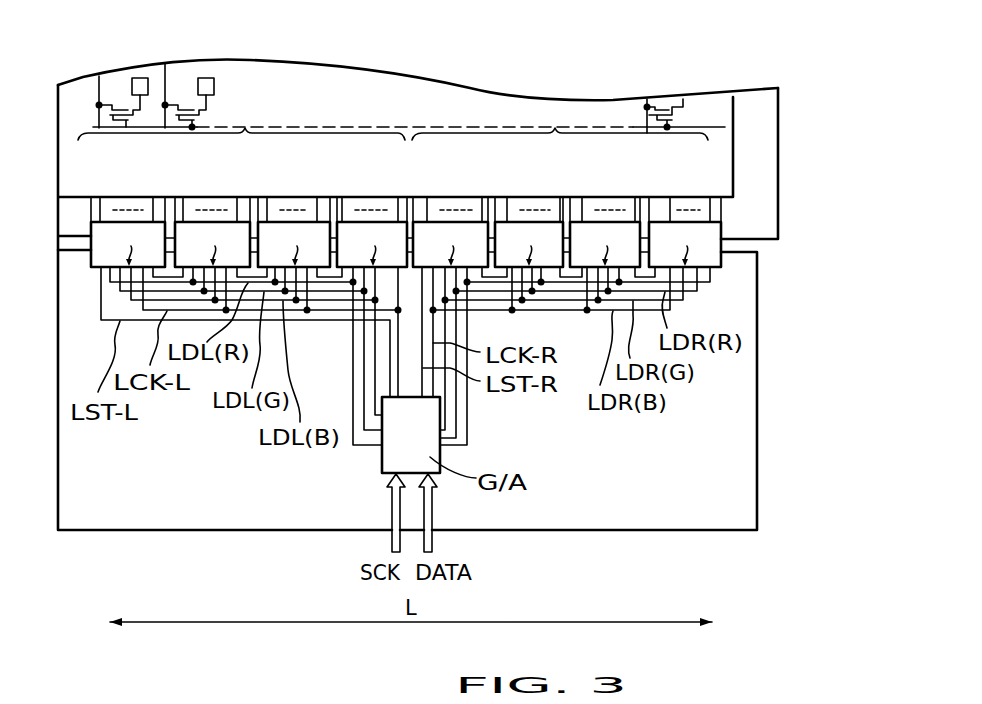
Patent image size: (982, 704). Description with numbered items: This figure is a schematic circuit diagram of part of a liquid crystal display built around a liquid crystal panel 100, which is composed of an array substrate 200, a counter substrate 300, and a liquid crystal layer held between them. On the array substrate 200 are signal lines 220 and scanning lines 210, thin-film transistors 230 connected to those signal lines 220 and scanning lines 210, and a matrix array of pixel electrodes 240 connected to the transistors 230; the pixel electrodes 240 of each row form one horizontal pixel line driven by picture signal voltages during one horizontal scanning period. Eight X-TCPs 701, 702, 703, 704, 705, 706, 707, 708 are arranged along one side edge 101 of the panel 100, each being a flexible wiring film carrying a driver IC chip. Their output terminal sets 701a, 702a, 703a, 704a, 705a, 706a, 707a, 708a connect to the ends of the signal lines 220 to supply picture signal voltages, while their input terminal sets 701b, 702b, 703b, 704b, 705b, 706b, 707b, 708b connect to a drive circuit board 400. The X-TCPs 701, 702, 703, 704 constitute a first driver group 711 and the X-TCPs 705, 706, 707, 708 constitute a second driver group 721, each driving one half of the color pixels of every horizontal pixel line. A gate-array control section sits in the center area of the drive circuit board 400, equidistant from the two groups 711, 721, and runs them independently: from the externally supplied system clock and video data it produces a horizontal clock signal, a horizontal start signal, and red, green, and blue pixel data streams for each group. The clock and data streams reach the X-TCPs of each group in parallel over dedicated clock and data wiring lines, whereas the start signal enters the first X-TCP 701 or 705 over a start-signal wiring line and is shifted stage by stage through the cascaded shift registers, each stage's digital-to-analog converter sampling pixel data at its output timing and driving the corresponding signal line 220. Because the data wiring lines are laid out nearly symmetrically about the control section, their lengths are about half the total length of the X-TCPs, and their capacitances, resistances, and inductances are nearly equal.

The liquid crystal panel 100 is at (472, 126).
The side edge 101 is at (757, 238).
The array substrate 200 is at (755, 108).
The counter substrate 300 is at (707, 118).
The scanning line 210 is at (148, 126).
The signal line 220 is at (97, 127).
The thin-film transistor 230 is at (112, 86).
The pixel electrode 240 is at (138, 78).
The drive circuit board 400 is at (742, 415).
The first driver group 711 is at (241, 123).
The second driver group 721 is at (560, 123).
The X-TCP 701 is at (108, 228).
The X-TCP 702 is at (192, 228).
The X-TCP 703 is at (275, 228).
The X-TCP 704 is at (354, 228).
The X-TCP 705 is at (430, 228).
The X-TCP 706 is at (512, 228).
The X-TCP 707 is at (587, 228).
The X-TCP 708 is at (667, 228).
The output terminal set 701a is at (142, 214).
The output terminal set 702a is at (226, 214).
The output terminal set 703a is at (306, 214).
The output terminal set 704a is at (387, 214).
The output terminal set 705a is at (471, 214).
The output terminal set 706a is at (549, 214).
The output terminal set 707a is at (624, 214).
The output terminal set 708a is at (703, 214).
The input terminal set 701b is at (128, 244).
The input terminal set 702b is at (212, 244).
The input terminal set 703b is at (294, 244).
The input terminal set 704b is at (372, 244).
The input terminal set 705b is at (450, 244).
The input terminal set 706b is at (529, 244).
The input terminal set 707b is at (605, 244).
The input terminal set 708b is at (685, 244).